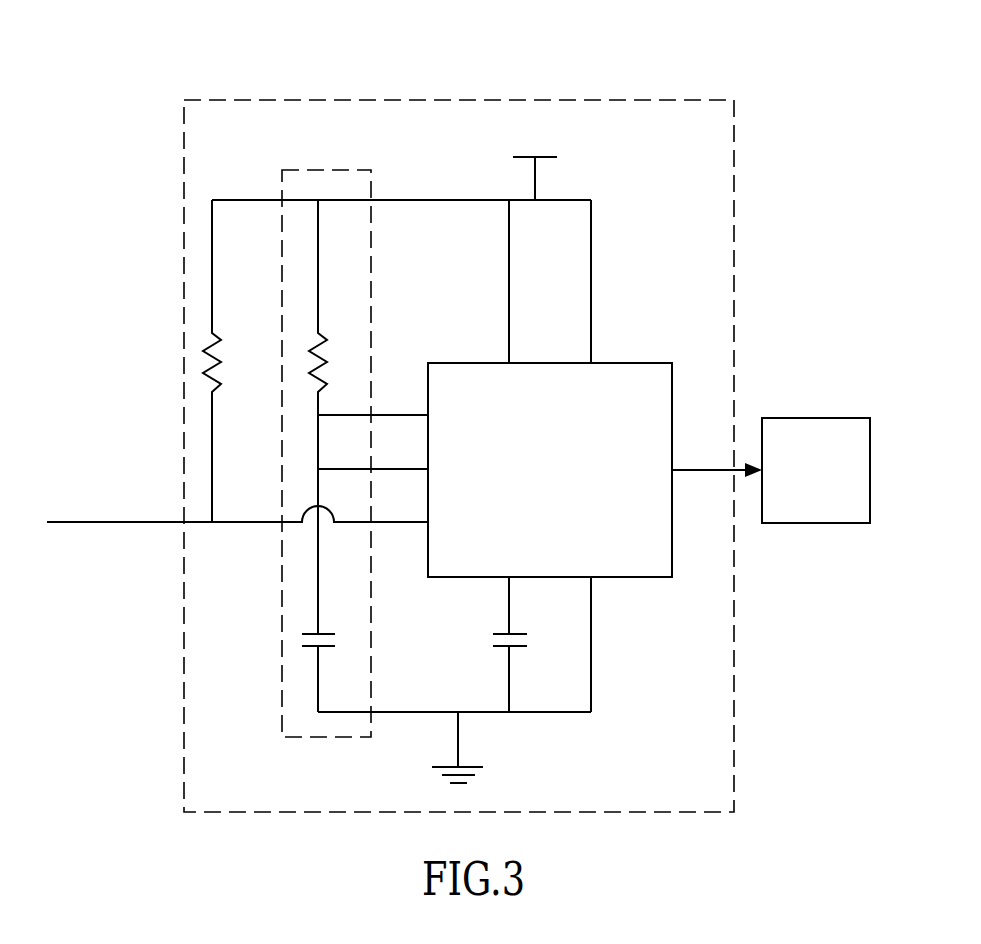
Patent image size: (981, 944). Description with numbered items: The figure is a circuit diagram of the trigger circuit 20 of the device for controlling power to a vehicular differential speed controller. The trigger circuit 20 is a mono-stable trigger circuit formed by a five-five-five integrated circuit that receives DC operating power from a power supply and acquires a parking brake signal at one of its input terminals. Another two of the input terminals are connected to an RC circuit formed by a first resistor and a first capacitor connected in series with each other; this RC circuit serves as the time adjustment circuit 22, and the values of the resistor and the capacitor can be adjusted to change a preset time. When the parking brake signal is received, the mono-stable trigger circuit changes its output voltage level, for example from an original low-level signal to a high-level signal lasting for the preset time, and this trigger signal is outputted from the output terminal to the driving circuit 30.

The trigger circuit 20 is at (423, 100).
The time adjustment circuit 22 is at (282, 697).
The driving circuit 30 is at (804, 512).